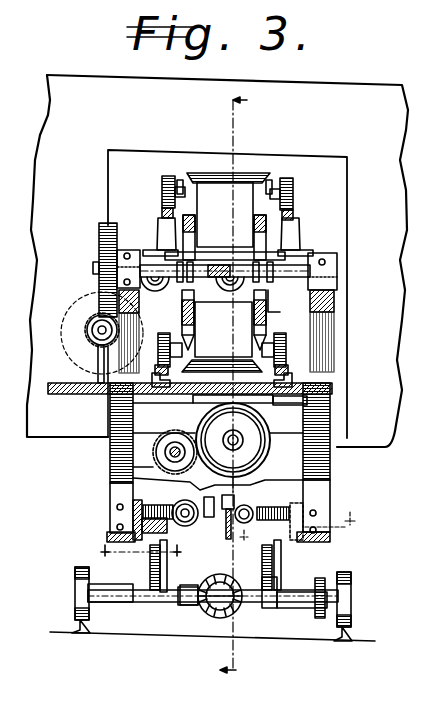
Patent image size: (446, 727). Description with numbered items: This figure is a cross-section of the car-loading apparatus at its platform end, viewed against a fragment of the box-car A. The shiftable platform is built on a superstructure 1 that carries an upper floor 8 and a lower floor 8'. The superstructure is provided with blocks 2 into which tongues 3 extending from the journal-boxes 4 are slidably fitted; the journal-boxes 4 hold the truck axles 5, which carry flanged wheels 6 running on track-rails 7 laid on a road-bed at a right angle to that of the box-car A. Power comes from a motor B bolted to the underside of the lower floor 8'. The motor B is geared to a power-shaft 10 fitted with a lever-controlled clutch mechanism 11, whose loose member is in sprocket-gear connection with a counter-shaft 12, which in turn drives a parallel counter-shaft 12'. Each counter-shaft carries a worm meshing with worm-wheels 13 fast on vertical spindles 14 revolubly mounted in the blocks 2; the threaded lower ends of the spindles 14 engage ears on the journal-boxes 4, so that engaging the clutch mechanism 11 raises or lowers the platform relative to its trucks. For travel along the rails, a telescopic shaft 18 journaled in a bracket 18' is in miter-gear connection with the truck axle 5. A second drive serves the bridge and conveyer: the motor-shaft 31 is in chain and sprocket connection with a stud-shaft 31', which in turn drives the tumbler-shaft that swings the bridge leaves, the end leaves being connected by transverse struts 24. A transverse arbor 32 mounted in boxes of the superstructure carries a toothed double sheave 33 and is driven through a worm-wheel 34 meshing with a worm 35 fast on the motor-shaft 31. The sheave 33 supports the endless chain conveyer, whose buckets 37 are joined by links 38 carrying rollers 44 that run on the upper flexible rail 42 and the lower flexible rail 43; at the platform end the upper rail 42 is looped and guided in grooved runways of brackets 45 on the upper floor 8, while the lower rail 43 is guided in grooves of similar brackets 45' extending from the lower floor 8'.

The superstructure 1 is at (110, 490).
The blocks 2 is at (92, 549).
The tongues 3 is at (168, 546).
The journal-boxes 4 is at (130, 601).
The truck axles 5 is at (238, 611).
The flanged wheels 6 is at (75, 591).
The track-rails 7 is at (88, 631).
The upper floor 8 is at (227, 299).
The lower floor 8' is at (190, 404).
The power-shaft 10 is at (175, 450).
The clutch mechanism 11 is at (303, 535).
The counter-shaft 12 is at (185, 501).
The parallel counter-shaft 12' is at (257, 500).
The worm-wheels 13 is at (152, 505).
The vertical spindles 14 is at (160, 571).
The telescopic shaft 18 is at (205, 523).
The bracket 18' is at (228, 509).
The transverse struts 24 is at (245, 285).
The motor-shaft 31 is at (77, 361).
The stud-shaft 31' is at (143, 331).
The transverse arbor 32 is at (278, 311).
The toothed double sheave 33 is at (205, 222).
The worm-wheel 34 is at (99, 236).
The worm 35 is at (88, 324).
The buckets 37 is at (242, 176).
The links 38 is at (180, 186).
The upper flexible rail 42 is at (162, 210).
The lower flexible rail 43 is at (155, 366).
The rollers 44 is at (162, 181).
The brackets 45 is at (227, 232).
The brackets 45' is at (263, 387).
The box-car A is at (345, 158).
The motor B is at (255, 432).